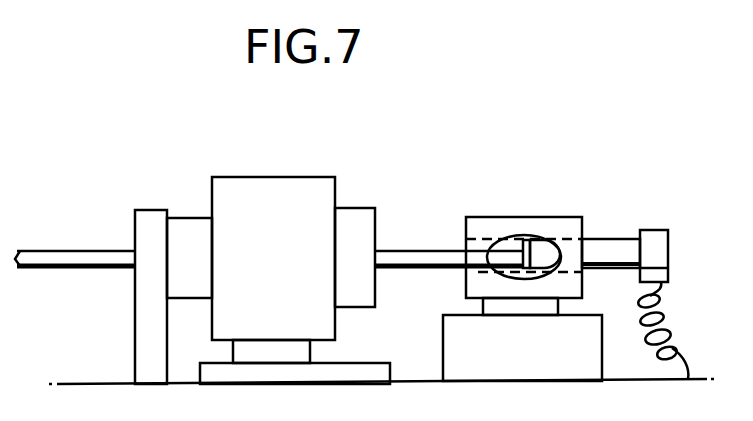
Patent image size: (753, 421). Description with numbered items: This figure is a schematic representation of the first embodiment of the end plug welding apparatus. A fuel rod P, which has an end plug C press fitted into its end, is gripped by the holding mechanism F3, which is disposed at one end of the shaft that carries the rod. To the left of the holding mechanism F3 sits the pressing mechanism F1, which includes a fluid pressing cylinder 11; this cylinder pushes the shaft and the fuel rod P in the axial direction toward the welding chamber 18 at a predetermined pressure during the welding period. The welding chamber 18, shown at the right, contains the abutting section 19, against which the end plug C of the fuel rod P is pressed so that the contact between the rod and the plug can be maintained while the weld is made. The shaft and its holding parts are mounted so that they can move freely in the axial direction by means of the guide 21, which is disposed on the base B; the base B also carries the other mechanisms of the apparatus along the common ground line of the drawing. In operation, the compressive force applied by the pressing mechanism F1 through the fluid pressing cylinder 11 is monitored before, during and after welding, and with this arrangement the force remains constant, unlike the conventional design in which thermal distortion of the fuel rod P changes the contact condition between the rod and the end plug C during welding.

The fuel rod P is at (71, 250).
The fluid pressing cylinder 11 is at (180, 217).
The pressing mechanism F1 is at (196, 186).
The holding mechanism F3 is at (361, 180).
The guide 21 is at (312, 351).
The base B is at (92, 384).
The end plug C is at (524, 238).
The abutting section 19 is at (540, 247).
The welding chamber 18 is at (565, 217).